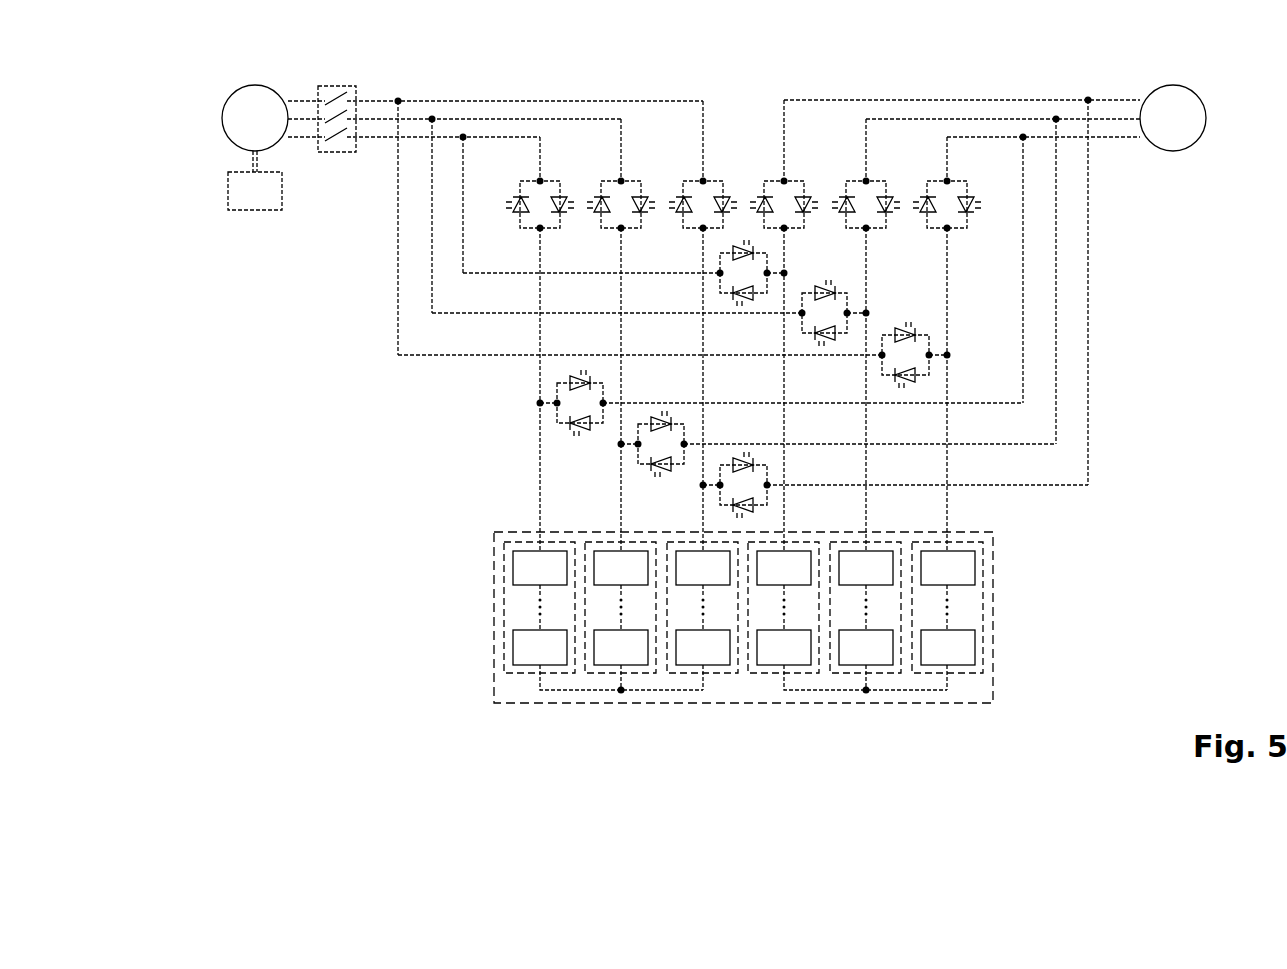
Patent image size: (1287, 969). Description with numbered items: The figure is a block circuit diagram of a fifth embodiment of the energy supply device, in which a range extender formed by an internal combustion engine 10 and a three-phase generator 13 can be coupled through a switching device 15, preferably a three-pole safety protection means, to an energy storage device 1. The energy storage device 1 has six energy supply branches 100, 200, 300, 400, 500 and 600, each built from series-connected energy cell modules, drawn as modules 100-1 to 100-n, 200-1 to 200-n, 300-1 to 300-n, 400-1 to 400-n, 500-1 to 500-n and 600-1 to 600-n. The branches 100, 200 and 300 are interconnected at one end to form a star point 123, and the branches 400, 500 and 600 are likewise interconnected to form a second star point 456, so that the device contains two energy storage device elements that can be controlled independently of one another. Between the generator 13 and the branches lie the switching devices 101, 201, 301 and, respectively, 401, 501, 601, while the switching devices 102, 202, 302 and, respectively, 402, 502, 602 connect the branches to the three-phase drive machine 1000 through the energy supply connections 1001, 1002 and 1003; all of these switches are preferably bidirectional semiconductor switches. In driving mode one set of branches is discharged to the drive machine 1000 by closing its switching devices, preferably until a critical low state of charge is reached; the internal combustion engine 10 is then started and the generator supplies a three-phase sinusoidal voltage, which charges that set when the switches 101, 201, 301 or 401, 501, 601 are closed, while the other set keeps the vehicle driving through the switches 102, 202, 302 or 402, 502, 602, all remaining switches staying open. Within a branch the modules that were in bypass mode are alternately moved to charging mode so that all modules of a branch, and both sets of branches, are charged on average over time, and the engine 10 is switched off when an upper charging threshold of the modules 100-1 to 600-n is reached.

The energy storage device 1 is at (494, 688).
The internal combustion engine 10 is at (255, 210).
The generator 13 is at (240, 96).
The switching device 15 is at (340, 152).
The energy supply branch 100 is at (560, 488).
The energy cell module 100-1 is at (513, 655).
The energy cell module 100-n is at (517, 551).
The switching device 101 is at (568, 184).
The switching device 102 is at (615, 391).
The star point 123 is at (623, 693).
The energy supply branch 200 is at (598, 488).
The energy cell module 200-1 is at (612, 678).
The energy cell module 200-n is at (598, 551).
The switching device 201 is at (648, 184).
The switching device 202 is at (697, 432).
The energy supply branch 300 is at (700, 488).
The energy cell module 300-1 is at (690, 678).
The energy cell module 300-n is at (680, 551).
The switching device 301 is at (728, 186).
The switching device 302 is at (778, 472).
The energy supply branch 400 is at (847, 500).
The energy cell module 400-1 is at (800, 678).
The energy cell module 400-n is at (806, 551).
The switching device 401 is at (780, 259).
The switching device 402 is at (808, 186).
The second star point 456 is at (864, 693).
The energy supply branch 500 is at (889, 488).
The energy cell module 500-1 is at (875, 678).
The energy cell module 500-n is at (887, 551).
The switching device 501 is at (860, 300).
The switching device 502 is at (890, 186).
The energy supply branch 600 is at (990, 488).
The energy cell module 600-1 is at (975, 655).
The energy cell module 600-n is at (968, 551).
The switching device 601 is at (942, 340).
The switching device 602 is at (970, 233).
The drive machine 1000 is at (1206, 118).
The energy supply connection 1001 is at (1088, 100).
The energy supply connection 1002 is at (1056, 119).
The energy supply connection 1003 is at (1023, 137).